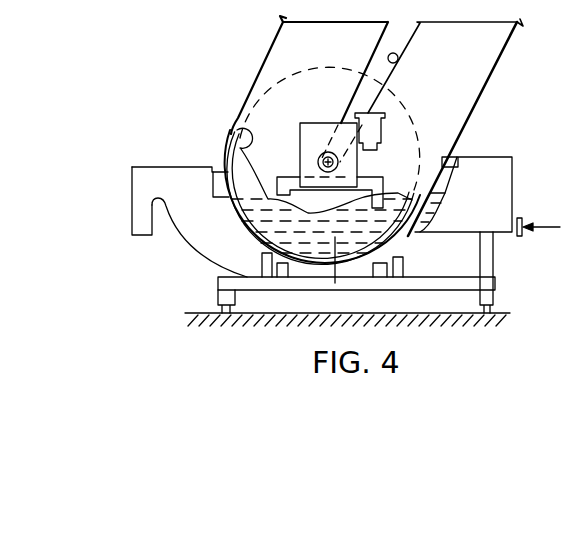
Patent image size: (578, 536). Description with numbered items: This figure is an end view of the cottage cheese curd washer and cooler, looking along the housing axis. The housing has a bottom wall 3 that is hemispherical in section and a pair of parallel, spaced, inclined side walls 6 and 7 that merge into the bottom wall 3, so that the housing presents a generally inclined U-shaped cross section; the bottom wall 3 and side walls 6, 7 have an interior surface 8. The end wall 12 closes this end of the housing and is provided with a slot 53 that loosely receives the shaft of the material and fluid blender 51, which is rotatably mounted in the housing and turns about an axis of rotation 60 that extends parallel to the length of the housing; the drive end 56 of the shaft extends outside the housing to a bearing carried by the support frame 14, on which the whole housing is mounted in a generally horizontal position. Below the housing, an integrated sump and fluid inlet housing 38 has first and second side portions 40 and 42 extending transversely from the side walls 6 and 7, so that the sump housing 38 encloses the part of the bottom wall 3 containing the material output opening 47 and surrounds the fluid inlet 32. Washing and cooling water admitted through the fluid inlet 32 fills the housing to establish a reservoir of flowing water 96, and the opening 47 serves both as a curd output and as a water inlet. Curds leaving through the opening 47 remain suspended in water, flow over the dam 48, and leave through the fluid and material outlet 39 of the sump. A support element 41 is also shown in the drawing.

The bottom wall 3 is at (412, 244).
The side wall 6 is at (263, 63).
The side wall 7 is at (498, 68).
The interior surface 8 is at (236, 129).
The end wall 12 is at (453, 99).
The support frame 14 is at (497, 280).
The fluid inlet 32 is at (527, 220).
The integrated sump and fluid inlet housing 38 is at (150, 160).
The fluid and material outlet 39 is at (131, 222).
The first side portion 40 is at (172, 166).
The support pedestal 41 is at (402, 246).
The second side portion 42 is at (513, 167).
The material output opening 47 is at (250, 238).
The dam 48 is at (163, 221).
The material and fluid blender 51 is at (300, 76).
The slot 53 is at (398, 63).
The drive end 56 is at (320, 157).
The axis of rotation 60 is at (340, 168).
The reservoir of flowing water 96 is at (335, 283).